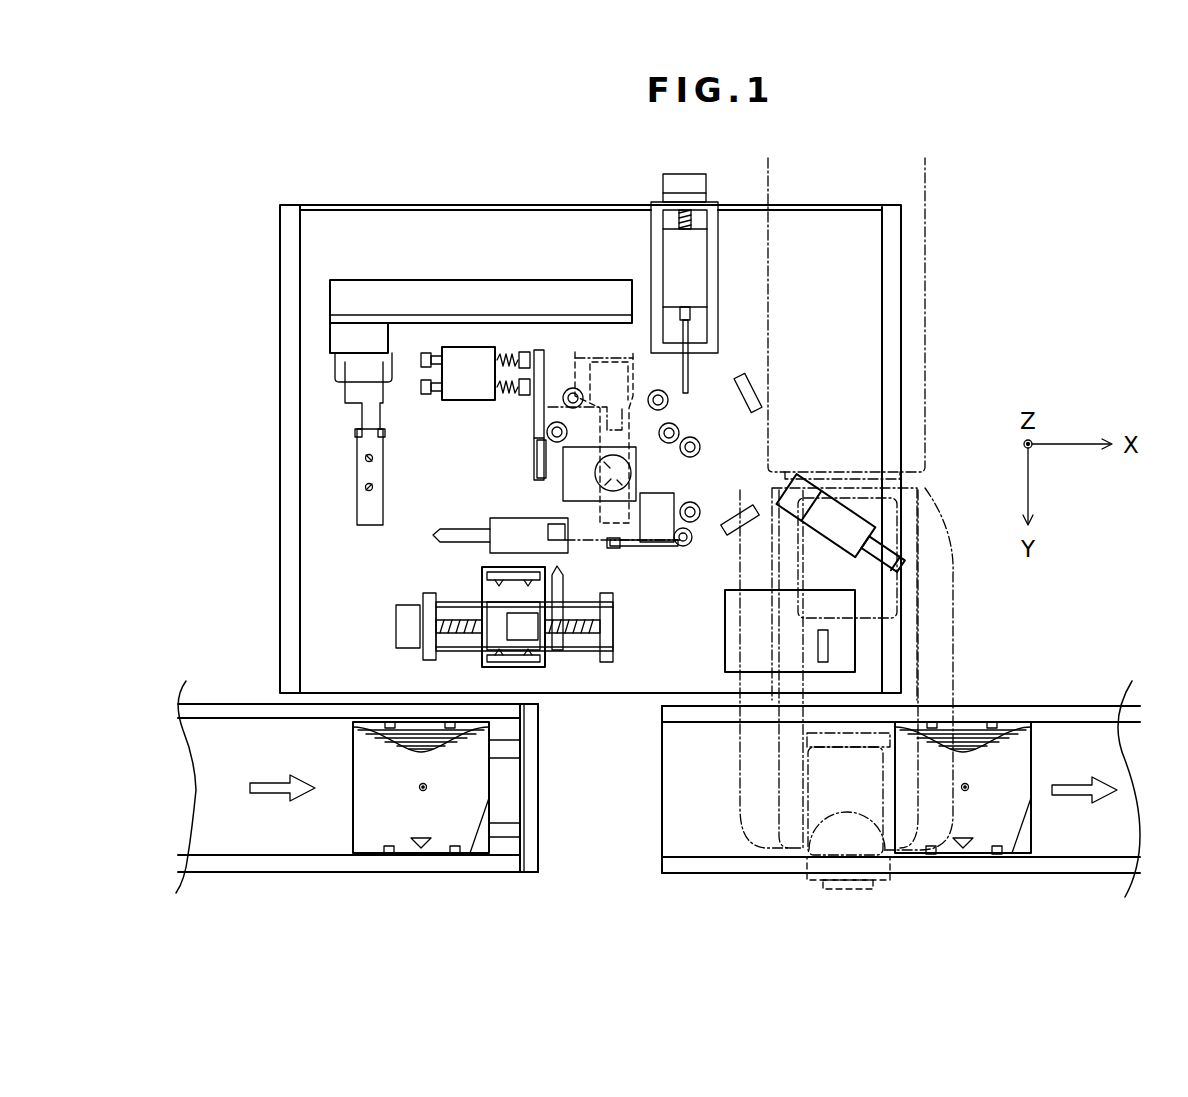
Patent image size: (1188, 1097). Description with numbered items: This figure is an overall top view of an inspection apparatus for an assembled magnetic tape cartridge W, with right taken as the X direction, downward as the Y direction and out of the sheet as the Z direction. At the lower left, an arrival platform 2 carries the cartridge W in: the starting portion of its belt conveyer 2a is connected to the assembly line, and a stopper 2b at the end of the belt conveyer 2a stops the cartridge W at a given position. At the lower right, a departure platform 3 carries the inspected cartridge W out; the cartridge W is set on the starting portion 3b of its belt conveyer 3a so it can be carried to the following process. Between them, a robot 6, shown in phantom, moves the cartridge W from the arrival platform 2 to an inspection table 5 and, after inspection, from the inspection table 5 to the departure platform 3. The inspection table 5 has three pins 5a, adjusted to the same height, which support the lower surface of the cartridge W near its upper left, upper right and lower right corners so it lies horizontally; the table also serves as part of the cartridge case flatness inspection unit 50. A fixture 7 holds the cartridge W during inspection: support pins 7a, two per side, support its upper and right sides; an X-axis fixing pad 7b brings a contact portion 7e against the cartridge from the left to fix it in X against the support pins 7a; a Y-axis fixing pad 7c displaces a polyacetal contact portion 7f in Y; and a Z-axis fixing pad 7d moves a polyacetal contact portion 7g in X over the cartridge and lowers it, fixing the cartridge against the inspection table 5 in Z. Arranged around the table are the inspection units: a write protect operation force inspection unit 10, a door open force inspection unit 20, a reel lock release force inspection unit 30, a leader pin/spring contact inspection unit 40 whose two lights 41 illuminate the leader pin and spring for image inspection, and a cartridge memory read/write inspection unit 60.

The arrival platform 2 is at (330, 873).
The belt conveyer 2a is at (255, 857).
The stopper 2b is at (520, 830).
The departure platform 3 is at (715, 875).
The belt conveyer 3a is at (1090, 840).
The starting portion 3b is at (682, 836).
The inspection table 5 is at (606, 487).
The pins 5a is at (545, 411).
The robot 6 is at (932, 298).
The fixture 7 is at (625, 430).
The support pins 7a is at (570, 386).
The X-axis fixing pad 7b is at (530, 448).
The Y-axis fixing pad 7c is at (640, 552).
The Z-axis fixing pad 7d is at (332, 456).
The contact portion 7e is at (538, 471).
The contact portion 7f is at (611, 550).
The contact portion 7g is at (370, 514).
The write protect operation force inspection unit 10 is at (598, 672).
The door open force inspection unit 20 is at (688, 172).
The reel lock release force inspection unit 30 is at (646, 467).
The leader pin/spring contact inspection unit 40 is at (836, 478).
The lights 41 is at (760, 393).
The cartridge case flatness inspection unit 50 is at (488, 550).
The cartridge memory read/write inspection unit 60 is at (860, 650).
The magnetic tape cartridge W is at (546, 498).